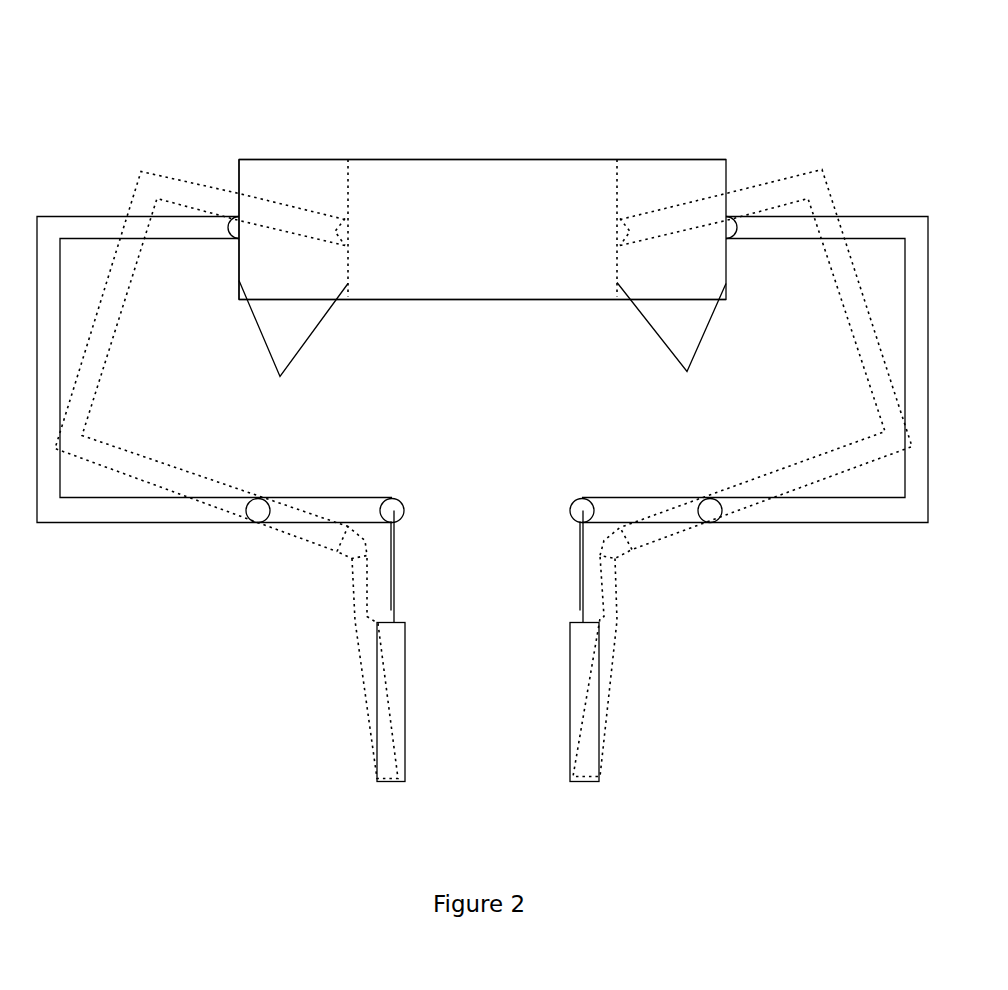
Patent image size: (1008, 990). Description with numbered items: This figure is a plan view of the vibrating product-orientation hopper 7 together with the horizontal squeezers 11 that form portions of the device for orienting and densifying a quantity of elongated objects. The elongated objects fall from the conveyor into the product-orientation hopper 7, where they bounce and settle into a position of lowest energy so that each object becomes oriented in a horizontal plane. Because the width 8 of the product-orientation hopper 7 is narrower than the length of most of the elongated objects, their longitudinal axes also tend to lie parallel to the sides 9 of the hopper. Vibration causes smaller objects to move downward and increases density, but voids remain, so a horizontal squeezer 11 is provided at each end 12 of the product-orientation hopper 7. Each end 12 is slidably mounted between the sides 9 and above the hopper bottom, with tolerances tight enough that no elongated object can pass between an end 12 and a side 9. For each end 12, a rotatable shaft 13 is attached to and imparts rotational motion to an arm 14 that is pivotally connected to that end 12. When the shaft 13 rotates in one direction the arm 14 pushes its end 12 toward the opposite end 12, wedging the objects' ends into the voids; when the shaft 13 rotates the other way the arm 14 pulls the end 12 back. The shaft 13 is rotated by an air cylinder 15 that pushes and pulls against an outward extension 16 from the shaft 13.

The product-orientation hopper 7 is at (477, 207).
The width 8 is at (239, 173).
The sides 9 is at (572, 155).
The horizontal squeezer 11 is at (94, 542).
The end 12 is at (482, 287).
The rotatable shaft 13 is at (255, 512).
The arm 14 is at (52, 353).
The air cylinder 15 is at (368, 670).
The outward extension 16 is at (318, 528).